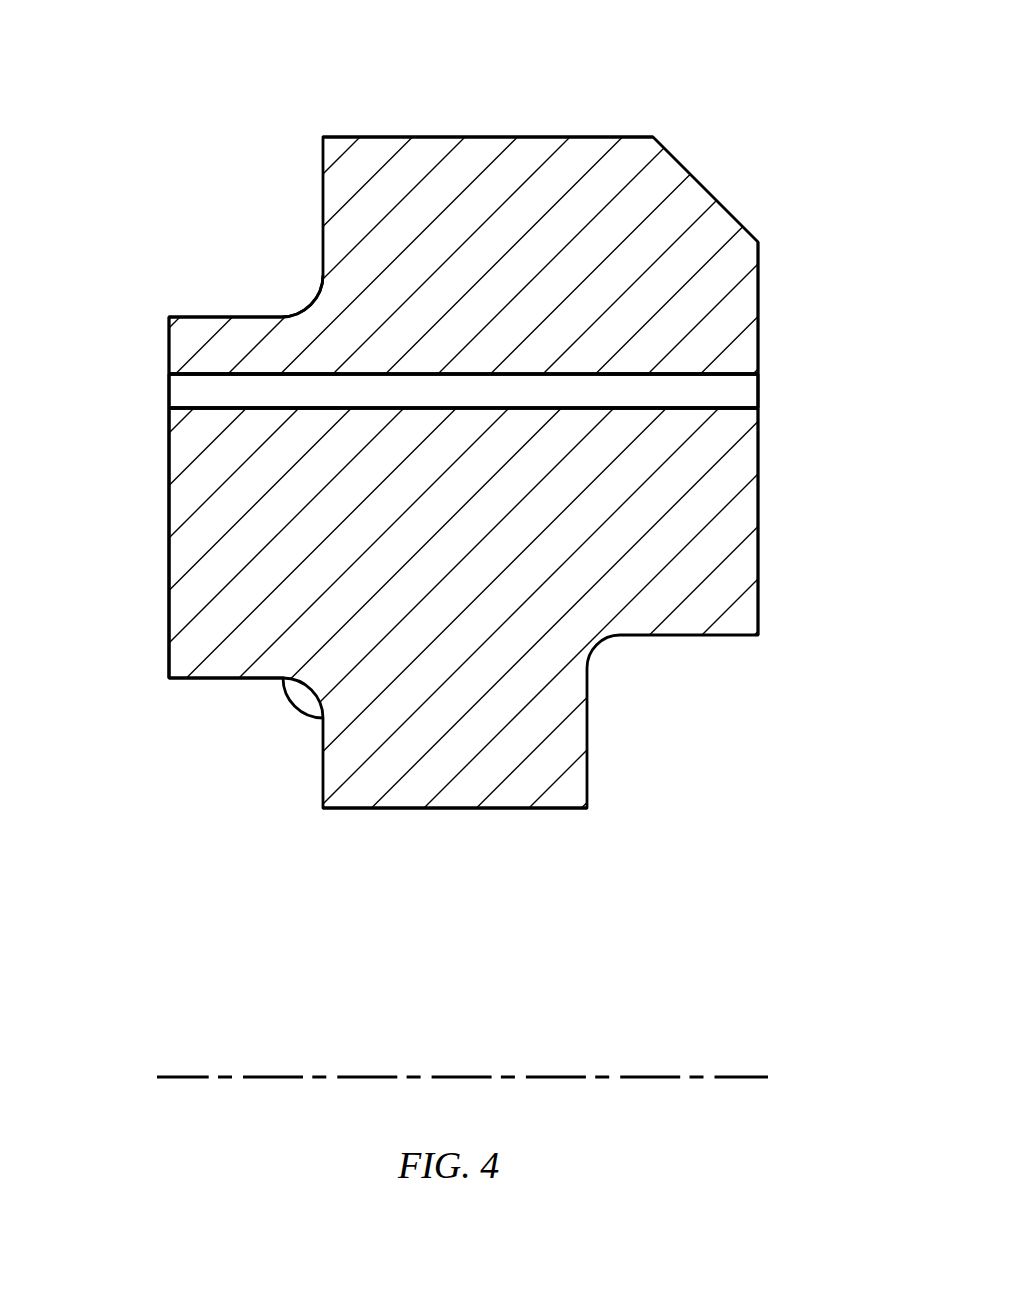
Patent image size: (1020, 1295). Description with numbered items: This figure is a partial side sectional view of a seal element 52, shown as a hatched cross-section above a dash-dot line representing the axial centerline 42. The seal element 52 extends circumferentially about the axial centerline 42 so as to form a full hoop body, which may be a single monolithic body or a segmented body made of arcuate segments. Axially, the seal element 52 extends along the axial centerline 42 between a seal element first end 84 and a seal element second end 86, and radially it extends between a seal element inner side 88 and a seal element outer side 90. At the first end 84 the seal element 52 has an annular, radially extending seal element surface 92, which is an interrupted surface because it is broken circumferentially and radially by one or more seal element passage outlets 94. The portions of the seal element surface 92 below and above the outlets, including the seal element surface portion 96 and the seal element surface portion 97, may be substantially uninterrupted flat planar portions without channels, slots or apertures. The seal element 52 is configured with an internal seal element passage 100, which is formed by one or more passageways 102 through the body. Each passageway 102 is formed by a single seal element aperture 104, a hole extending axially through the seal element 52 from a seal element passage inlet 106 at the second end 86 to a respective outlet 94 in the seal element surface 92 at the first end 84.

The axial centerline 42 is at (732, 1075).
The seal element 52 is at (683, 86).
The seal element first end 84 is at (169, 555).
The seal element second end 86 is at (758, 583).
The seal element inner side 88 is at (440, 808).
The seal element outer side 90 is at (498, 137).
The seal element surface 92 is at (169, 514).
The seal element passage outlet 94 is at (168, 389).
The seal element surface portion 96 is at (147, 656).
The seal element surface portion 97 is at (156, 338).
The seal element passage 100 is at (252, 384).
The passageway 102 is at (252, 384).
The seal element aperture 104 is at (643, 390).
The seal element passage inlet 106 is at (758, 387).